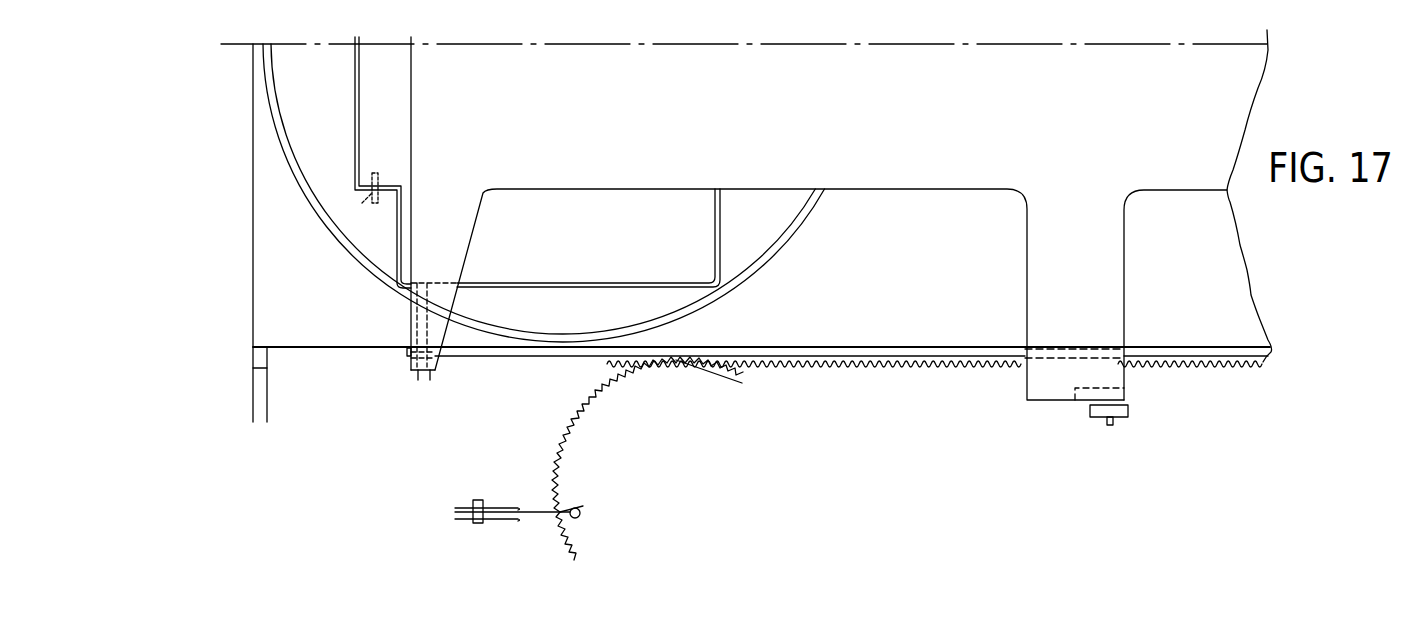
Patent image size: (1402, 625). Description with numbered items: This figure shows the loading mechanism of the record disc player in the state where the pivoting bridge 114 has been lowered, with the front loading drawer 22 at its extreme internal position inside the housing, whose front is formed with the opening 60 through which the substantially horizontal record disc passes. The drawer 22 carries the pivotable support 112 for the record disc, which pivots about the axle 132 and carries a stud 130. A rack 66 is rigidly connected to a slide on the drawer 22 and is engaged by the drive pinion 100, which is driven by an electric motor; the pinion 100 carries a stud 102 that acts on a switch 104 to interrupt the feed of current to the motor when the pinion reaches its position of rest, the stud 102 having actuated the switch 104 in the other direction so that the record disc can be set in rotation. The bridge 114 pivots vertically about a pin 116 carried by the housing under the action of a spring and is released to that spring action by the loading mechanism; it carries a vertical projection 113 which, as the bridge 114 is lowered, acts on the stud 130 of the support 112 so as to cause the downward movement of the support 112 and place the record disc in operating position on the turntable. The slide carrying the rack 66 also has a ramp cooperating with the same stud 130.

The drawer 22 is at (237, 194).
The opening 60 is at (516, 357).
The rack 66 is at (935, 368).
The drive pinion 100 is at (815, 488).
The stud 102 is at (580, 514).
The switch 104 is at (480, 500).
The pivotable support 112 is at (712, 228).
The vertical projection 113 is at (412, 371).
The bridge 114 is at (886, 179).
The pin 116 is at (1106, 425).
The stud 130 is at (430, 380).
The axle 132 is at (377, 203).